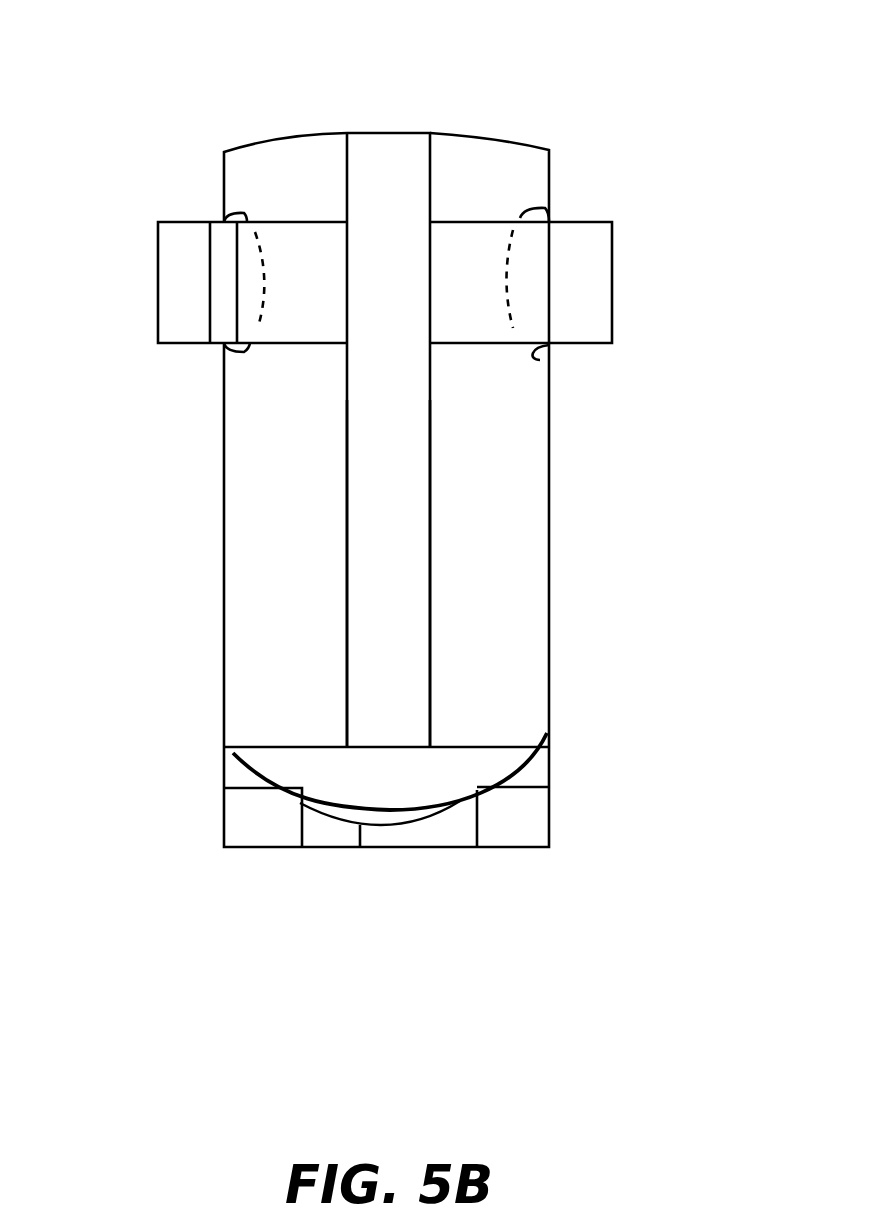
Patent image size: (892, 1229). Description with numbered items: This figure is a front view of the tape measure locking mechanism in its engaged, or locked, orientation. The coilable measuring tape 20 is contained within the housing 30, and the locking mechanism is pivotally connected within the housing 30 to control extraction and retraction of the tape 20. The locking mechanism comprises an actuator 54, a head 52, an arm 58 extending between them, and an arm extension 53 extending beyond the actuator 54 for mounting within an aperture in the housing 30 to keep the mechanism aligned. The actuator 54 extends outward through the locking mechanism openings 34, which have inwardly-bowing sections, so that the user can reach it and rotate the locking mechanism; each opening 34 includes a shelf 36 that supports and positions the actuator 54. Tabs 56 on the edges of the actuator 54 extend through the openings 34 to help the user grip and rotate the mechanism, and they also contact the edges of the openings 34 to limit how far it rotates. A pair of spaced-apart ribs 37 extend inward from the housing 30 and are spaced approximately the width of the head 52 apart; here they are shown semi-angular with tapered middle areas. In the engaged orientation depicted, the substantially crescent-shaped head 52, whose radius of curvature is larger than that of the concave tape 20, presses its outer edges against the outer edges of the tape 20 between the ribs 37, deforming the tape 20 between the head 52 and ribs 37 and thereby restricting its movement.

The coilable measuring tape 20 is at (360, 847).
The housing 30 is at (552, 545).
The locking mechanism opening 34 is at (505, 278).
The shelf 36 is at (537, 357).
The ribs 37 is at (272, 830).
The head 52 is at (297, 775).
The arm extension 53 is at (385, 160).
The actuator 54 is at (577, 253).
The tabs 56 is at (223, 253).
The arm 58 is at (377, 598).